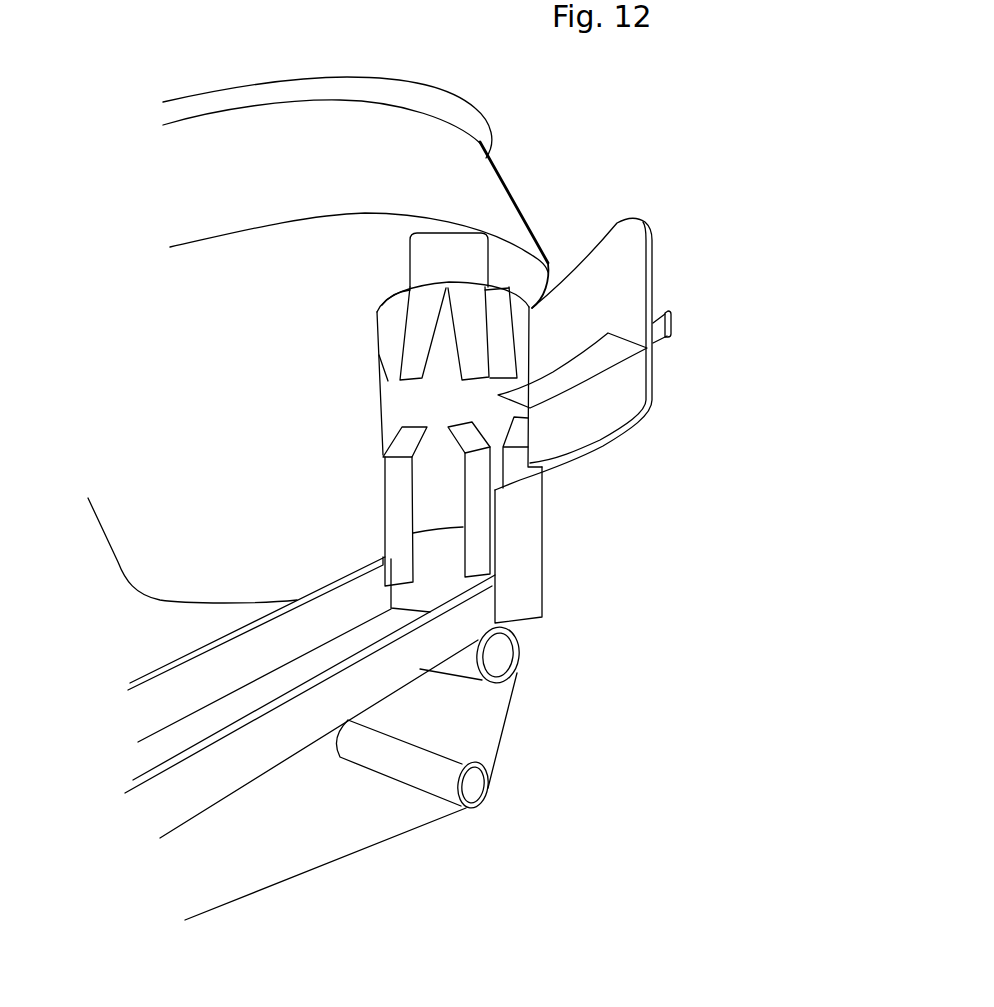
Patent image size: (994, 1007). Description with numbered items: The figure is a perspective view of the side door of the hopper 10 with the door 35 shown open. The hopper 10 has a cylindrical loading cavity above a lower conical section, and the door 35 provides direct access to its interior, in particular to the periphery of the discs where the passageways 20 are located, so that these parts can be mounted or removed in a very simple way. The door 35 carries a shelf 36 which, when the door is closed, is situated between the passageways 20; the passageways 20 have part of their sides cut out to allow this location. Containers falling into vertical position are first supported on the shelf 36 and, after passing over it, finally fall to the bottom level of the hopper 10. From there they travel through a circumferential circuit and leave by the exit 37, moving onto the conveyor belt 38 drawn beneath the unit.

The hopper 10 is at (270, 450).
The passageways 20 is at (477, 478).
The door 35 is at (615, 283).
The shelf 36 is at (597, 370).
The exit 37 is at (447, 567).
The conveyor belt 38 is at (313, 663).